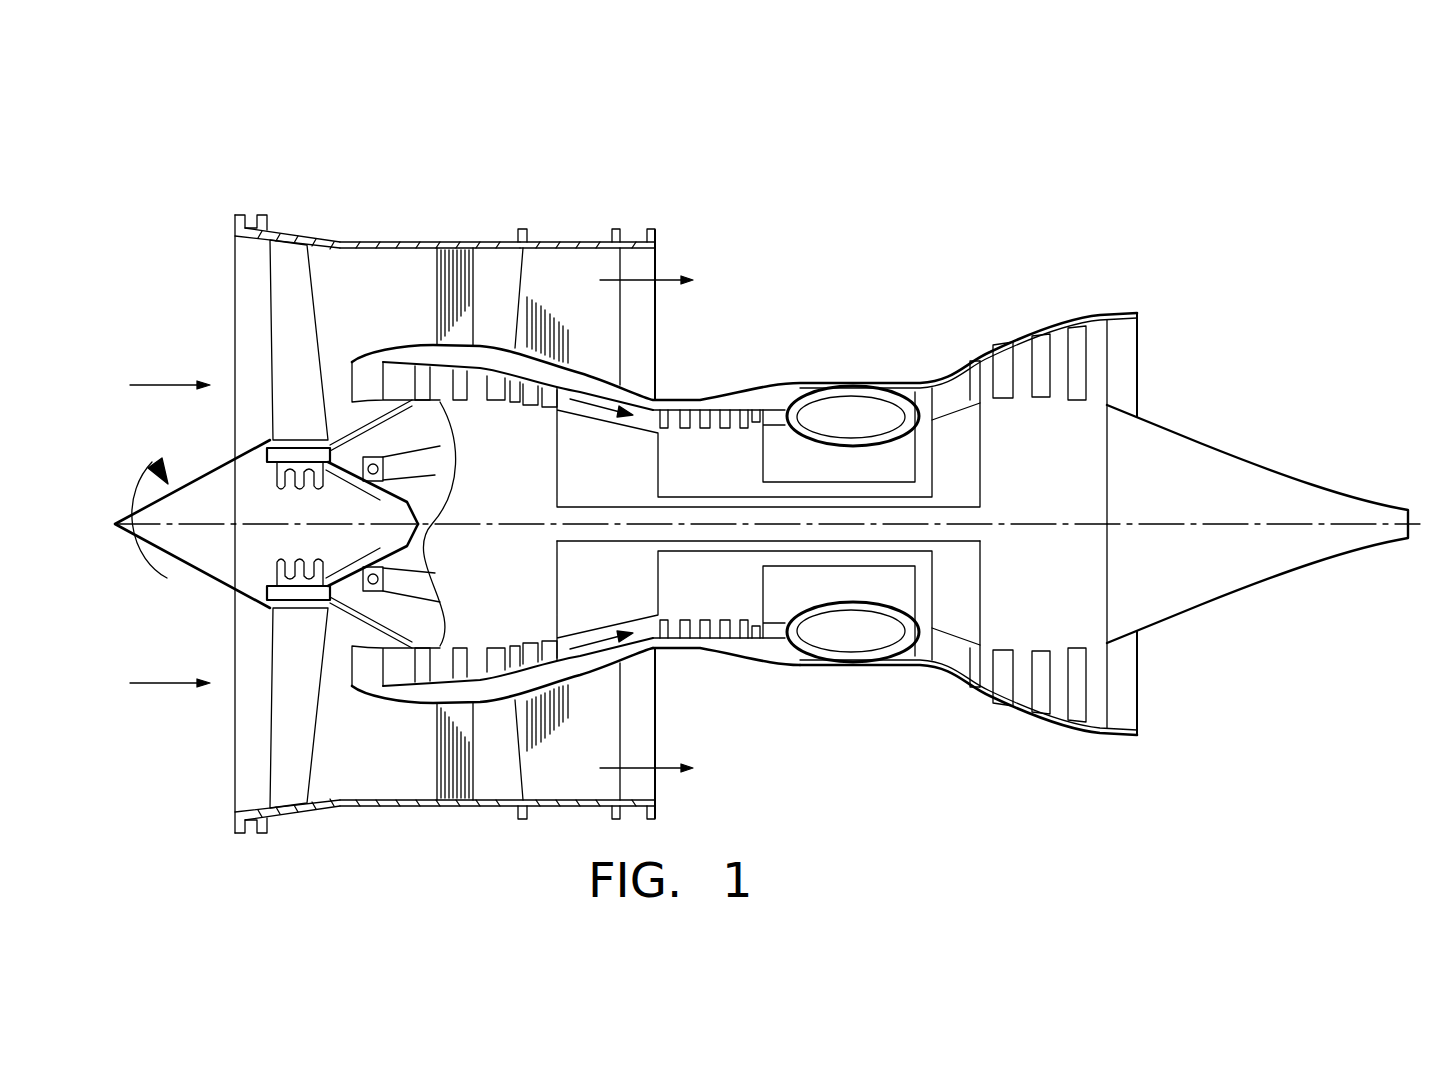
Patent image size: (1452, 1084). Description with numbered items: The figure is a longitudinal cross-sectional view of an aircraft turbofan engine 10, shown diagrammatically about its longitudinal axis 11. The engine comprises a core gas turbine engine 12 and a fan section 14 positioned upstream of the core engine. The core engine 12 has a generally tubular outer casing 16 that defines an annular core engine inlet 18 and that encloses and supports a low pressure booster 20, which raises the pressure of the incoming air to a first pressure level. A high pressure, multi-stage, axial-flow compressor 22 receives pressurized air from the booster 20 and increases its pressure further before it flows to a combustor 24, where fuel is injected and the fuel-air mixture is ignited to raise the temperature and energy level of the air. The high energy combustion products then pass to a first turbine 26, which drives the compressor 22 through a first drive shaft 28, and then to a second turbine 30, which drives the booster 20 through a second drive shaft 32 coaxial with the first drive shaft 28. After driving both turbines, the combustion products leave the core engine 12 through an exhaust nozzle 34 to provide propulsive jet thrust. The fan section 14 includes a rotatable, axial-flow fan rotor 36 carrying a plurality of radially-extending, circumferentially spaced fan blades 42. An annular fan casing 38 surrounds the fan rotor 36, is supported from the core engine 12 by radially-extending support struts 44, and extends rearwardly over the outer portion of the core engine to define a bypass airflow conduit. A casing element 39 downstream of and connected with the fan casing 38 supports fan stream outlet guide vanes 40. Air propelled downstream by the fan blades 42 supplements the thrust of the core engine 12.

The gas turbine engine 10 is at (692, 190).
The longitudinal axis 11 is at (1160, 522).
The core gas turbine engine 12 is at (803, 356).
The fan section 14 is at (303, 208).
The outer casing 16 is at (747, 673).
The core engine inlet 18 is at (340, 680).
The low pressure booster 20 is at (522, 460).
The high pressure compressor 22 is at (677, 478).
The combustor 24 is at (861, 423).
The first turbine 26 is at (922, 396).
The first drive shaft 28 is at (792, 488).
The second turbine 30 is at (1071, 463).
The second drive shaft 32 is at (751, 540).
The exhaust nozzle 34 is at (1143, 343).
The fan rotor 36 is at (268, 482).
The fan casing 38 is at (376, 240).
The casing element 39 is at (566, 240).
The fan stream outlet guide vanes 40 is at (604, 322).
The fan blades 42 is at (317, 306).
The support struts 44 is at (447, 325).